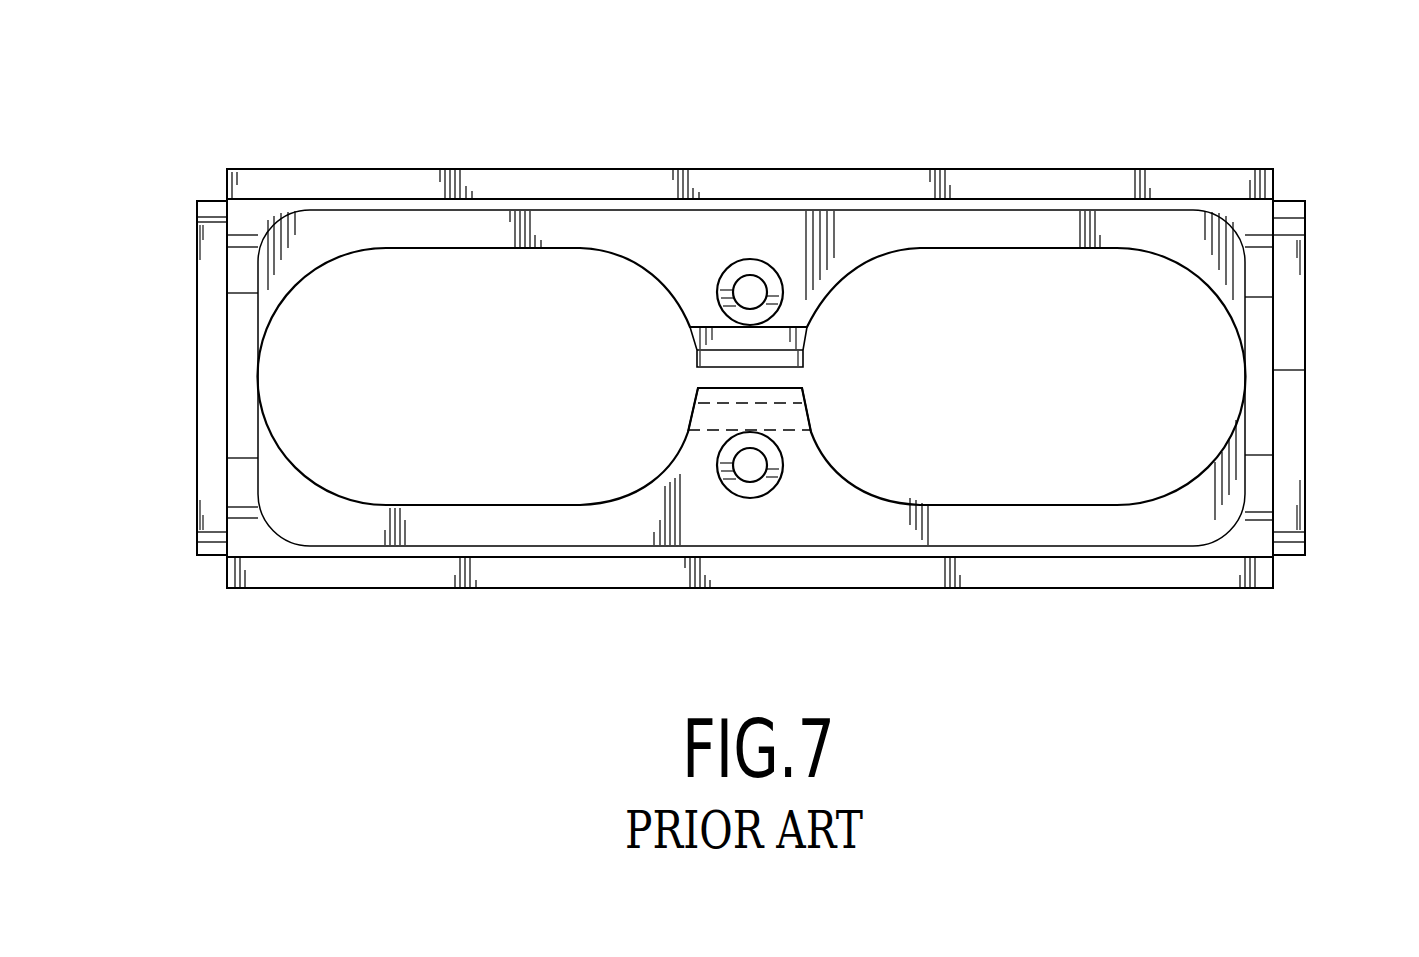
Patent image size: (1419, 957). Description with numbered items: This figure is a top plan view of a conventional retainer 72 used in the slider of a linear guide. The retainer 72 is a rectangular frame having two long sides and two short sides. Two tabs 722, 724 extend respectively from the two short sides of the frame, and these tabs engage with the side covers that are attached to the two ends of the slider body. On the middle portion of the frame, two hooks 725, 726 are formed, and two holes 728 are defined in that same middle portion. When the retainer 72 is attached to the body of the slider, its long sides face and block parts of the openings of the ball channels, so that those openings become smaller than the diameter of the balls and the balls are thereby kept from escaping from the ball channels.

The retainer 72 is at (740, 320).
The tab 722 is at (213, 370).
The tab 724 is at (1285, 383).
The hook 725 is at (697, 366).
The hook 726 is at (778, 397).
The hole 728 is at (743, 289).